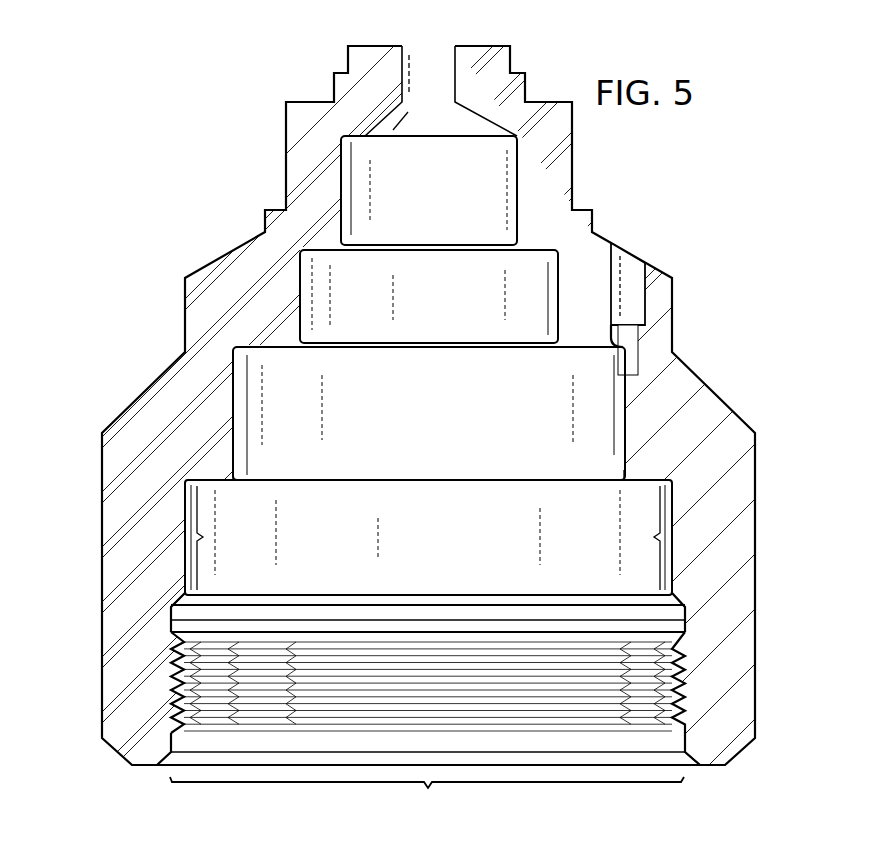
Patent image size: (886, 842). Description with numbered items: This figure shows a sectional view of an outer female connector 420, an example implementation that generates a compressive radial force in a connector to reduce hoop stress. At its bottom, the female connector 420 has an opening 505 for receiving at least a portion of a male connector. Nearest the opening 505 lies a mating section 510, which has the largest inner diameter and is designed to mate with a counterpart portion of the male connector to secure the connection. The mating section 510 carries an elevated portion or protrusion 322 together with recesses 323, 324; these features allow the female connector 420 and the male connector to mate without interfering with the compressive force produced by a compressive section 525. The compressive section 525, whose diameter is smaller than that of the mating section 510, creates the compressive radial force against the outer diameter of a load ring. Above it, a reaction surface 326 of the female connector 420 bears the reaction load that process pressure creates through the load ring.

The outer female connector 420 is at (221, 59).
The reaction surface 326 is at (206, 480).
The compressive section 525 is at (428, 538).
The recess 324 is at (200, 607).
The protrusion 322 is at (648, 612).
The mating section 510 is at (80, 633).
The recess 323 is at (692, 755).
The opening 505 is at (427, 798).